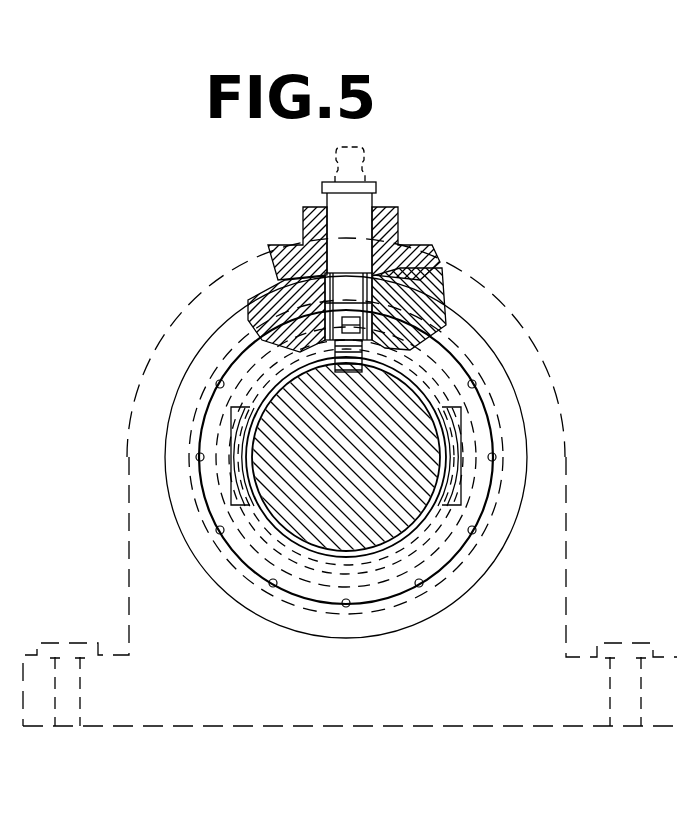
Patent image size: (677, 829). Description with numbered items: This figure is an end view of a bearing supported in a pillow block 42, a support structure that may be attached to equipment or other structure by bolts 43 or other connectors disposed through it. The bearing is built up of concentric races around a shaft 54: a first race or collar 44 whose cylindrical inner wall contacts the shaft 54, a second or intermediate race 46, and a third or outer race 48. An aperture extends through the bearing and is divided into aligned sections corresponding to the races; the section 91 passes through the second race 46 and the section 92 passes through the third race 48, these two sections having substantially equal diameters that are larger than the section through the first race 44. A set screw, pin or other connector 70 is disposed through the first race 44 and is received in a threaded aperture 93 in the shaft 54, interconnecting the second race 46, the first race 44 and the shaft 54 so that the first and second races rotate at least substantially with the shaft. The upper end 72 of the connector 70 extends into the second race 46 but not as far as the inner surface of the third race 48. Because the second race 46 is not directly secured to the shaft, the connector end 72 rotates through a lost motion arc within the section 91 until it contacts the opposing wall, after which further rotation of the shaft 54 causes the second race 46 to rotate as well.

The pillow block 42 is at (470, 685).
The bolts 43 is at (618, 690).
The first race 44 is at (317, 353).
The second race 46 is at (289, 327).
The third race 48 is at (374, 279).
The shaft 54 is at (321, 512).
The connector 70 is at (357, 372).
The upper end 72 is at (382, 298).
The aperture section 91 is at (314, 278).
The aperture section 92 is at (366, 286).
The threaded aperture 93 is at (346, 337).